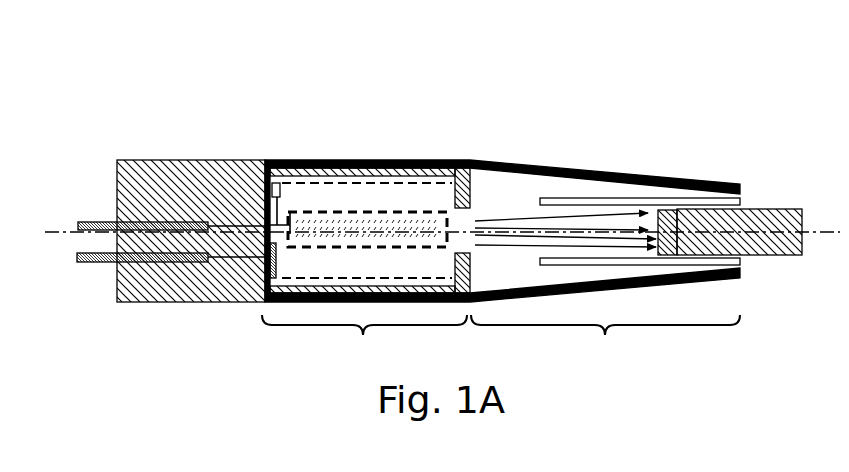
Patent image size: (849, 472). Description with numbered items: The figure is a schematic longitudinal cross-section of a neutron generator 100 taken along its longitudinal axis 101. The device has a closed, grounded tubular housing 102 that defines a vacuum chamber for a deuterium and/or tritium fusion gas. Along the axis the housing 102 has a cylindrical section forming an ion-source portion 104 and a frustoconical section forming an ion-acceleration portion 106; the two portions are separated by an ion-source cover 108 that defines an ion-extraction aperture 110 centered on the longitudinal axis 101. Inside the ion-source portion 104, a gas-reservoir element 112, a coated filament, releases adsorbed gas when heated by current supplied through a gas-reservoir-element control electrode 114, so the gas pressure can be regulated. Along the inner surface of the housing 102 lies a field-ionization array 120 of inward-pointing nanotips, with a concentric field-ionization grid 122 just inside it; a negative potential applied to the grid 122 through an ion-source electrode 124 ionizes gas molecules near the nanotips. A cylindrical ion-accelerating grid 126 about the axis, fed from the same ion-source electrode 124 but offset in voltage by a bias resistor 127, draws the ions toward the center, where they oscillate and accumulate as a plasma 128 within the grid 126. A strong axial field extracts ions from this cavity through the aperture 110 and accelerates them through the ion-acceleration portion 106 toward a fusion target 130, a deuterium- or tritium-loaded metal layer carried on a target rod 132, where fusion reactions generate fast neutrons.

The neutron generator 100 is at (205, 70).
The longitudinal axis 101 is at (56, 230).
The tubular housing 102 is at (291, 161).
The ion-source portion 104 is at (364, 338).
The ion-acceleration portion 106 is at (605, 338).
The ion-source cover 108 is at (467, 263).
The ion-extraction aperture 110 is at (460, 222).
The gas-reservoir element 112 is at (270, 263).
The gas-reservoir-element control electrode 114 is at (102, 262).
The field-ionization array 120 is at (351, 172).
The field-ionization grid 122 is at (390, 183).
The ion-source electrode 124 is at (148, 223).
The ion-accelerating grid 126 is at (412, 212).
The bias resistor 127 is at (272, 190).
The plasma 128 is at (428, 227).
The fusion target 130 is at (668, 210).
The target rod 132 is at (762, 215).